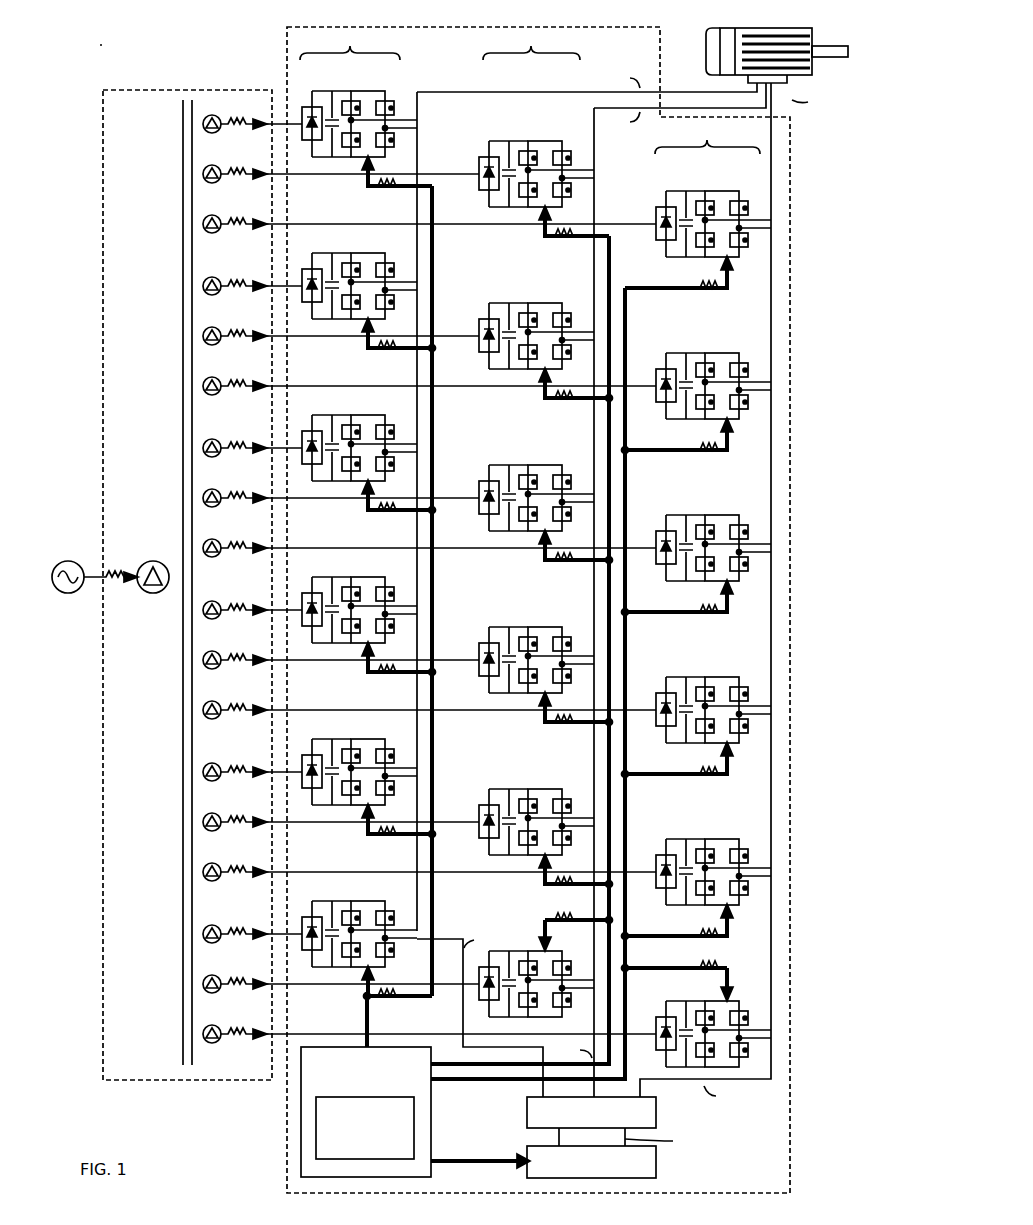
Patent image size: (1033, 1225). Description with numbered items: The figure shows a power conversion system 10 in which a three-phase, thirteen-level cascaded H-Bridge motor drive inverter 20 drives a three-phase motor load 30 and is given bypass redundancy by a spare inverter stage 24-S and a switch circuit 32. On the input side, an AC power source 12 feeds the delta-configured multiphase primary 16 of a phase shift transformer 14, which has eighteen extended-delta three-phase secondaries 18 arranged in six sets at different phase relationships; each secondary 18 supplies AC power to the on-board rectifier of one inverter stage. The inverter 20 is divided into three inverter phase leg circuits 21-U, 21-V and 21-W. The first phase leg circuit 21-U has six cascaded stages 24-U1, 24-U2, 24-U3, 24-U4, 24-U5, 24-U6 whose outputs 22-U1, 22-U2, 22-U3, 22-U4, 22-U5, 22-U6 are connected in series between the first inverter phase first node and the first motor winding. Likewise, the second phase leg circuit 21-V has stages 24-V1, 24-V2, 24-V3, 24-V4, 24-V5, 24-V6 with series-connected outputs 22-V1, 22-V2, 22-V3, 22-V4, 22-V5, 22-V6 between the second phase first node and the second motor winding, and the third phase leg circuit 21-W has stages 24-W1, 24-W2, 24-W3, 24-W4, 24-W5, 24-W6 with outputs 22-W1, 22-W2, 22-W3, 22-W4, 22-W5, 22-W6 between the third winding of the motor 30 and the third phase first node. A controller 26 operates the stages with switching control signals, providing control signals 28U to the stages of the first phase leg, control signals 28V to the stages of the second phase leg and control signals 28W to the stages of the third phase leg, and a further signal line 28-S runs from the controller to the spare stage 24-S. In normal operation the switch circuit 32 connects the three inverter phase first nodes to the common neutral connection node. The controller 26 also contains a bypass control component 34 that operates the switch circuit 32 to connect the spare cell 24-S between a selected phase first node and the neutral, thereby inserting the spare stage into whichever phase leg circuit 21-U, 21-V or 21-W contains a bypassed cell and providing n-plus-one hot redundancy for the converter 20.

The power conversion system 10 is at (108, 44).
The AC power source 12 is at (64, 562).
The phase shift transformer 14 is at (176, 90).
The multiphase primary 16 is at (142, 562).
The three-phase secondaries 18 is at (218, 104).
The multiphase multilevel inverter 20 is at (298, 26).
The first inverter phase leg circuit 21-U is at (352, 50).
The second inverter phase leg circuit 21-V is at (526, 50).
The third inverter phase leg circuit 21-W is at (708, 144).
The inverter stage output 22-U1 is at (428, 141).
The inverter stage output 22-U2 is at (420, 277).
The inverter stage output 22-U3 is at (420, 439).
The inverter stage output 22-U4 is at (420, 601).
The inverter stage output 22-U5 is at (420, 763).
The inverter stage output 22-U6 is at (402, 921).
The inverter stage output 22-V1 is at (582, 152).
The inverter stage output 22-V2 is at (582, 314).
The inverter stage output 22-V3 is at (582, 476).
The inverter stage output 22-V4 is at (582, 638).
The inverter stage output 22-V5 is at (582, 800).
The inverter stage output 22-V6 is at (583, 962).
The inverter stage output 22-W1 is at (764, 200).
The inverter stage output 22-W2 is at (764, 362).
The inverter stage output 22-W3 is at (764, 524).
The inverter stage output 22-W4 is at (764, 686).
The inverter stage output 22-W5 is at (764, 848).
The inverter stage output 22-W6 is at (757, 1013).
The inverter stage 24-U1 is at (352, 86).
The inverter stage 24-U2 is at (352, 248).
The inverter stage 24-U3 is at (352, 410).
The inverter stage 24-U4 is at (352, 572).
The inverter stage 24-U5 is at (352, 734).
The inverter stage 24-U6 is at (352, 896).
The inverter stage 24-V1 is at (522, 136).
The inverter stage 24-V2 is at (522, 298).
The inverter stage 24-V3 is at (522, 460).
The inverter stage 24-V4 is at (522, 622).
The inverter stage 24-V5 is at (522, 784).
The inverter stage 24-V6 is at (518, 946).
The inverter stage 24-W1 is at (698, 186).
The inverter stage 24-W2 is at (698, 348).
The inverter stage 24-W3 is at (698, 510).
The inverter stage 24-W4 is at (698, 672).
The inverter stage 24-W5 is at (698, 834).
The inverter stage 24-W6 is at (698, 999).
The spare inverter stage 24-S is at (656, 1162).
The controller 26 is at (397, 1047).
The control signals 28U is at (367, 1028).
The control signals 28V is at (507, 1068).
The control signals 28W is at (524, 1083).
The spare stage control line 28-S is at (506, 1164).
The three-phase motor load 30 is at (814, 70).
The switch circuit 32 is at (656, 1113).
The bypass control component 34 is at (316, 1118).